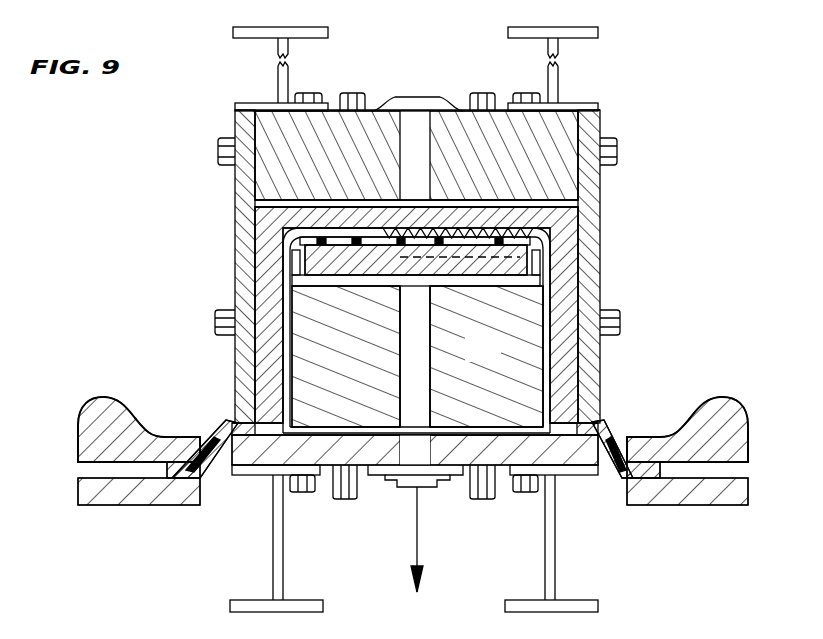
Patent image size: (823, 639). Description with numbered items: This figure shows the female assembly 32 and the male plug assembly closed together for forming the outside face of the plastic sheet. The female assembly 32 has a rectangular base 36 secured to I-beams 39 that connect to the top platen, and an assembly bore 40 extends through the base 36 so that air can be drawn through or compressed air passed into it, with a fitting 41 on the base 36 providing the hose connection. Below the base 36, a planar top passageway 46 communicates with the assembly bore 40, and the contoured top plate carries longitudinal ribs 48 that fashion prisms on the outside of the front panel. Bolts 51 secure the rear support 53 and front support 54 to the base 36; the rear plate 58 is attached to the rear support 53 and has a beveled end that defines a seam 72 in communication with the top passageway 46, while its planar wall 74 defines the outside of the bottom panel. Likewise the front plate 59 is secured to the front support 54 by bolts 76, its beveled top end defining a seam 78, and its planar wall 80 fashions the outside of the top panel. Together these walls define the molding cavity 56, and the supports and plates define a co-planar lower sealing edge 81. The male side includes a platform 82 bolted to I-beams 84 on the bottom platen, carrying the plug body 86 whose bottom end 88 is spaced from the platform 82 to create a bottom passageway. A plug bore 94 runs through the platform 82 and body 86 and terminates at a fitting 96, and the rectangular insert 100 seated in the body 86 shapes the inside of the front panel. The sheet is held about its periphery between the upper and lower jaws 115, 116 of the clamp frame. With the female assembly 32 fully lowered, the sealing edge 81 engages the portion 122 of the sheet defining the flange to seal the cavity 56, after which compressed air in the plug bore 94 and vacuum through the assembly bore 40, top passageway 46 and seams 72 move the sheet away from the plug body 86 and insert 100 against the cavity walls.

The female assembly 32 is at (660, 130).
The rectangular base 36 is at (562, 125).
The I-beams 39 is at (598, 32).
The assembly bore 40 is at (437, 128).
The fitting 41 is at (418, 137).
The top passageway 46 is at (253, 197).
The longitudinal ribs 48 is at (490, 213).
The bolts 51 is at (220, 142).
The rear support 53 is at (555, 242).
The front support 54 is at (243, 275).
The cavity 56 is at (285, 245).
The rear plate 58 is at (558, 265).
The front plate 59 is at (260, 377).
The seam 72 is at (560, 222).
The planar wall 74 is at (575, 280).
The bolts 76 is at (218, 318).
The seam 78 is at (255, 222).
The planar wall 80 is at (255, 352).
The lower sealing edge 81 is at (240, 420).
The platform 82 is at (598, 470).
The I-beams 84 is at (278, 565).
The plug body 86 is at (497, 359).
The bottom end 88 is at (517, 437).
The plug bore 94 is at (432, 462).
The fitting 96 is at (405, 487).
The rectangular insert 100 is at (575, 248).
The upper jaw 115 is at (103, 398).
The lower jaw 116 is at (95, 505).
The portion of the sheet 122 is at (225, 428).